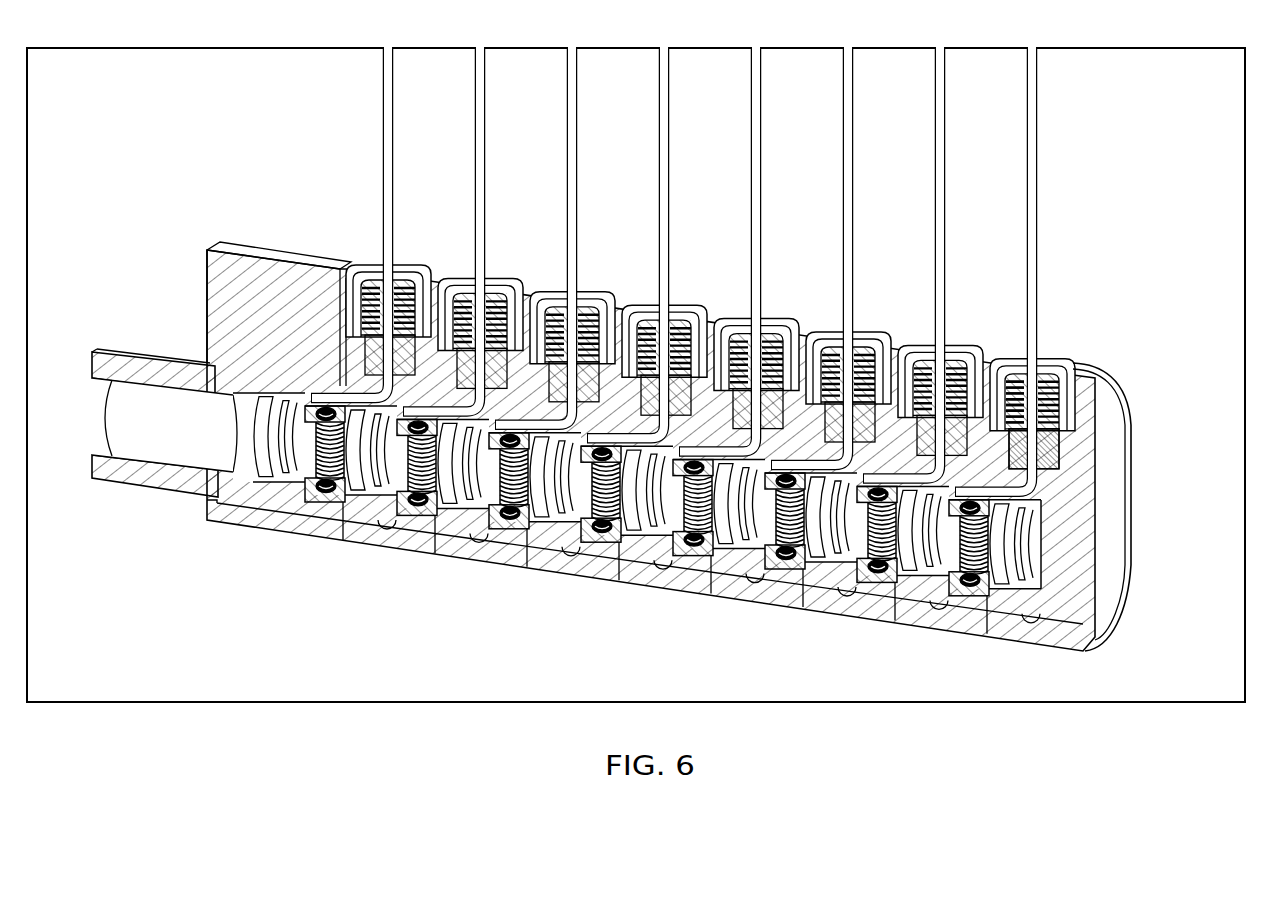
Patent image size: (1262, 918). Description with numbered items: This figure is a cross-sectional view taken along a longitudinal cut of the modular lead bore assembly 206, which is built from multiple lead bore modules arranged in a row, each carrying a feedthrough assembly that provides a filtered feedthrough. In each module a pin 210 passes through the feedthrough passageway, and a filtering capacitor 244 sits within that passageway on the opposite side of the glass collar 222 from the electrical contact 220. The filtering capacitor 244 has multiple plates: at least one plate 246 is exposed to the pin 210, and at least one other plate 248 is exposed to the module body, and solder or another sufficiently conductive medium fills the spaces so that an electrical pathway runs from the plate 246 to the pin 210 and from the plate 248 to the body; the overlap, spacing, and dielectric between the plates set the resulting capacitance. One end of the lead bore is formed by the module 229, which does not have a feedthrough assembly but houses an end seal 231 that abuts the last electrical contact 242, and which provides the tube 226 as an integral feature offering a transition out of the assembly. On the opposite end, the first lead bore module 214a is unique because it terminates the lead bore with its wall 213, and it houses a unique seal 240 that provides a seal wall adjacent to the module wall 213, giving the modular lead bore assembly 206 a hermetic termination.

The modular lead bore assembly 206 is at (529, 608).
The pin 210 is at (1034, 242).
The wall 213 is at (1113, 512).
The lead bore module 214a is at (1073, 652).
The electrical contact 220 is at (946, 566).
The glass collar 222 is at (1047, 452).
The tube 226 is at (128, 486).
The module 229 is at (228, 262).
The end seal 231 is at (228, 372).
The seal 240 is at (1097, 622).
The last electrical contact 242 is at (323, 497).
The filtering capacitor 244 is at (1043, 383).
The plate 246 is at (1017, 383).
The plate 248 is at (1057, 400).